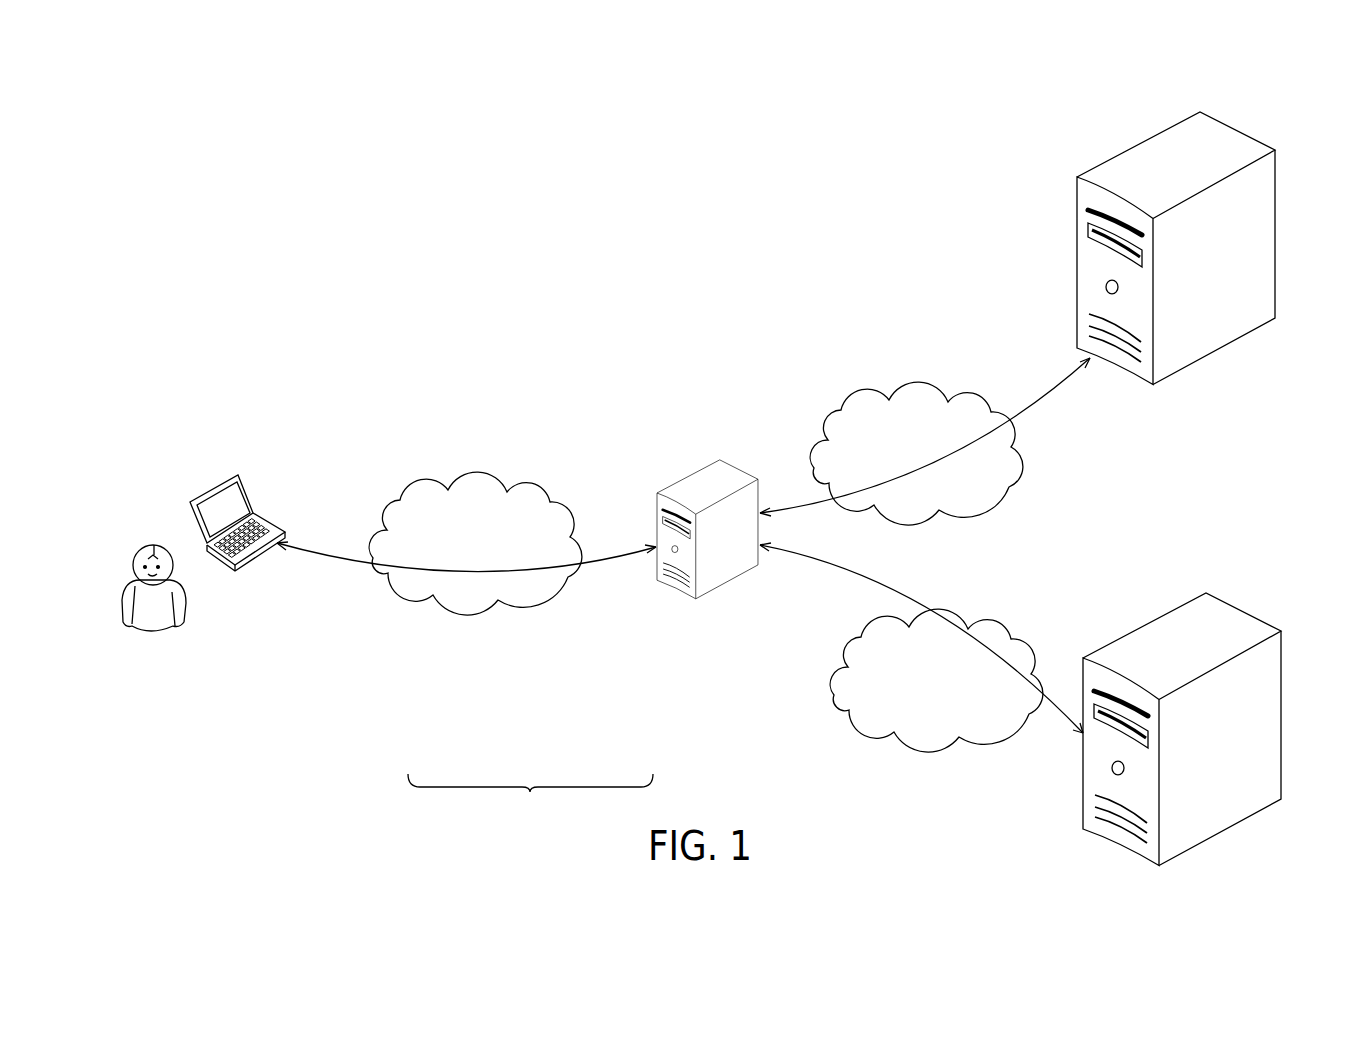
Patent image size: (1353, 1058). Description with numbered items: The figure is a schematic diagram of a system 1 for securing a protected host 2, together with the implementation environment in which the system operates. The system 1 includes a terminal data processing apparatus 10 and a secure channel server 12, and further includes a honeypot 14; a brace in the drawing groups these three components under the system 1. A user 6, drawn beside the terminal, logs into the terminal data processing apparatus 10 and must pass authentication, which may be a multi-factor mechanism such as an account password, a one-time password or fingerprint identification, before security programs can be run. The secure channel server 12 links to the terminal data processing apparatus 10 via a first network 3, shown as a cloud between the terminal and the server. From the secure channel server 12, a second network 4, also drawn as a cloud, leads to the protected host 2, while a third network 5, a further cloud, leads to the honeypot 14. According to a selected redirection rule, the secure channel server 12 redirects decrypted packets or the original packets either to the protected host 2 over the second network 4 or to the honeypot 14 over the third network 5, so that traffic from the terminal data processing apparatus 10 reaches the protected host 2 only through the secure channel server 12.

The system 1 is at (530, 797).
The protected host 2 is at (1148, 133).
The first network 3 is at (509, 481).
The second network 4 is at (971, 391).
The third network 5 is at (991, 618).
The user 6 is at (154, 545).
The terminal data processing apparatus 10 is at (257, 558).
The secure channel server 12 is at (665, 587).
The honeypot 14 is at (1083, 788).